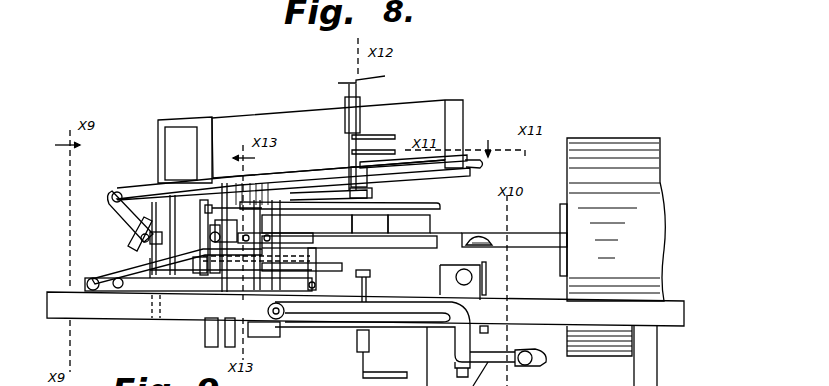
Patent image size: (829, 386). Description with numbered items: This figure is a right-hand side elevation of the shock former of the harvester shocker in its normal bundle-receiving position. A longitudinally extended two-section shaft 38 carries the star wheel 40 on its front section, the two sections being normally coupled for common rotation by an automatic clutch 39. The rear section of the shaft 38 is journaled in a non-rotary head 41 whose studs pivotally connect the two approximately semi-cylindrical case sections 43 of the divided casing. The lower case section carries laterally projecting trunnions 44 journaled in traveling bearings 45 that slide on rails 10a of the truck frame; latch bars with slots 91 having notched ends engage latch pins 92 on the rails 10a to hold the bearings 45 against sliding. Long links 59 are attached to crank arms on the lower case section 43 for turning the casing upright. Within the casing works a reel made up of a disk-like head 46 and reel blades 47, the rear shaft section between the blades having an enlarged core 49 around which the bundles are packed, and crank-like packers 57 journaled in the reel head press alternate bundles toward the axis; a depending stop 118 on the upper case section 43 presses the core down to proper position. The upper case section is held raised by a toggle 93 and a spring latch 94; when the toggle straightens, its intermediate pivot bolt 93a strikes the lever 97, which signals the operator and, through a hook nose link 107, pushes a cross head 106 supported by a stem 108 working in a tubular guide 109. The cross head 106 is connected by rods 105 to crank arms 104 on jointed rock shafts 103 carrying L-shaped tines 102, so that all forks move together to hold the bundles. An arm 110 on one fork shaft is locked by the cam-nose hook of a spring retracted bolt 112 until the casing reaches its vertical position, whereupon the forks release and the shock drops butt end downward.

The rails 10a is at (672, 322).
The star wheel 40 is at (655, 246).
The shaft 38 is at (528, 232).
The traveling bearings 45 is at (560, 279).
The automatic clutch 39 is at (478, 236).
The trunnions 44 is at (464, 297).
The slots 91 is at (348, 318).
The latch pins 92 is at (278, 320).
The case sections 43 is at (297, 112).
The depending stop 118 is at (165, 125).
The rods 105 is at (318, 186).
The rail 57 is at (433, 205).
The reel head 46 is at (260, 222).
The reel blades 47 is at (364, 227).
The core 49 is at (409, 224).
The crank arms 104 is at (372, 195).
The tubular guide 109 is at (372, 269).
The cross head 106 is at (188, 344).
The stem 108 is at (193, 321).
The head 41 is at (212, 348).
The spring latch 94 is at (153, 190).
The intermediate pivot bolt 93a is at (138, 237).
The lever 97 is at (100, 263).
The toggle 93 is at (110, 207).
The hook nose link 107 is at (145, 260).
The tines 102 is at (348, 82).
The rock shafts 103 is at (362, 110).
The arm 110 is at (430, 160).
The spring retracted bolt 112 is at (484, 166).
The links 59 is at (548, 364).